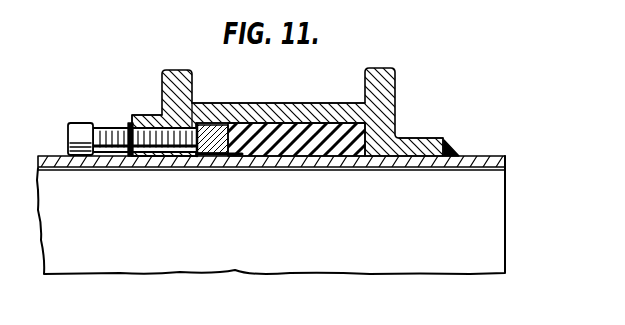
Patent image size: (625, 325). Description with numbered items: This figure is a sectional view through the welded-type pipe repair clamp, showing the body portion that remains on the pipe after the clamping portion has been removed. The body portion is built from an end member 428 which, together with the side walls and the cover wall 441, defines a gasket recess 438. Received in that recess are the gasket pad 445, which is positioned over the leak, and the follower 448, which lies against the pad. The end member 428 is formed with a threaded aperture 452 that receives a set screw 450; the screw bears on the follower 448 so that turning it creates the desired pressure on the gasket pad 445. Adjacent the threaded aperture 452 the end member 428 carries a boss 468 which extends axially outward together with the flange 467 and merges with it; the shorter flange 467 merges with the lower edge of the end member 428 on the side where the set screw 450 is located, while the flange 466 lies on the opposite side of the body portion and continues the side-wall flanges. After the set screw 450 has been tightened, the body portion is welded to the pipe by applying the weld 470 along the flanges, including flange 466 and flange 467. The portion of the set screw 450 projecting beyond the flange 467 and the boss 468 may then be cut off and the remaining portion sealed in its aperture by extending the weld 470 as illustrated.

The end member 428 is at (172, 74).
The gasket recess 438 is at (219, 127).
The cover wall 441 is at (282, 107).
The gasket pad 445 is at (259, 147).
The follower 448 is at (208, 156).
The set screw 450 is at (120, 133).
The threaded aperture 452 is at (160, 117).
The flange 466 is at (418, 143).
The flange 467 is at (140, 158).
The boss 468 is at (148, 122).
The weld 470 is at (455, 148).